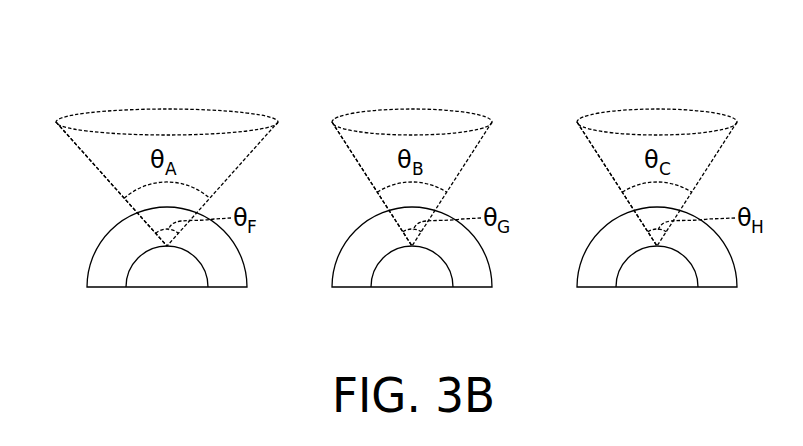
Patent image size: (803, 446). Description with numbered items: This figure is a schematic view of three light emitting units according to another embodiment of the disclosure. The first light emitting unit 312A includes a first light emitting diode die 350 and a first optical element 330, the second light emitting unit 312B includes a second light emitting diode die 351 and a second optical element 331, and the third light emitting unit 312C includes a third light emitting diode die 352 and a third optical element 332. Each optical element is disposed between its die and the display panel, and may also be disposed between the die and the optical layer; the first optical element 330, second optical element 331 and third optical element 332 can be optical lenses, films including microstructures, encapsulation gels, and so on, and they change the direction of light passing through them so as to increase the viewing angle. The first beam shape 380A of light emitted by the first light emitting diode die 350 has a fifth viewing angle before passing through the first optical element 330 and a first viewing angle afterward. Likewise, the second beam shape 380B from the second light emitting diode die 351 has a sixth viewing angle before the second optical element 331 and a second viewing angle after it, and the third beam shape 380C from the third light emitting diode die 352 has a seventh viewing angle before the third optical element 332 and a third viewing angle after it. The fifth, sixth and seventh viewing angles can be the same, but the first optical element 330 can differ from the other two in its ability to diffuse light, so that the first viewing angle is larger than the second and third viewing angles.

The first light emitting unit 312A is at (132, 70).
The second light emitting unit 312B is at (362, 70).
The third light emitting unit 312C is at (619, 70).
The first beam shape 380A is at (97, 168).
The second beam shape 380B is at (361, 167).
The third beam shape 380C is at (607, 168).
The first optical element 330 is at (99, 246).
The second optical element 331 is at (337, 258).
The third optical element 332 is at (581, 263).
The first light emitting diode die 350 is at (172, 275).
The second light emitting diode die 351 is at (418, 275).
The third light emitting diode die 352 is at (663, 275).